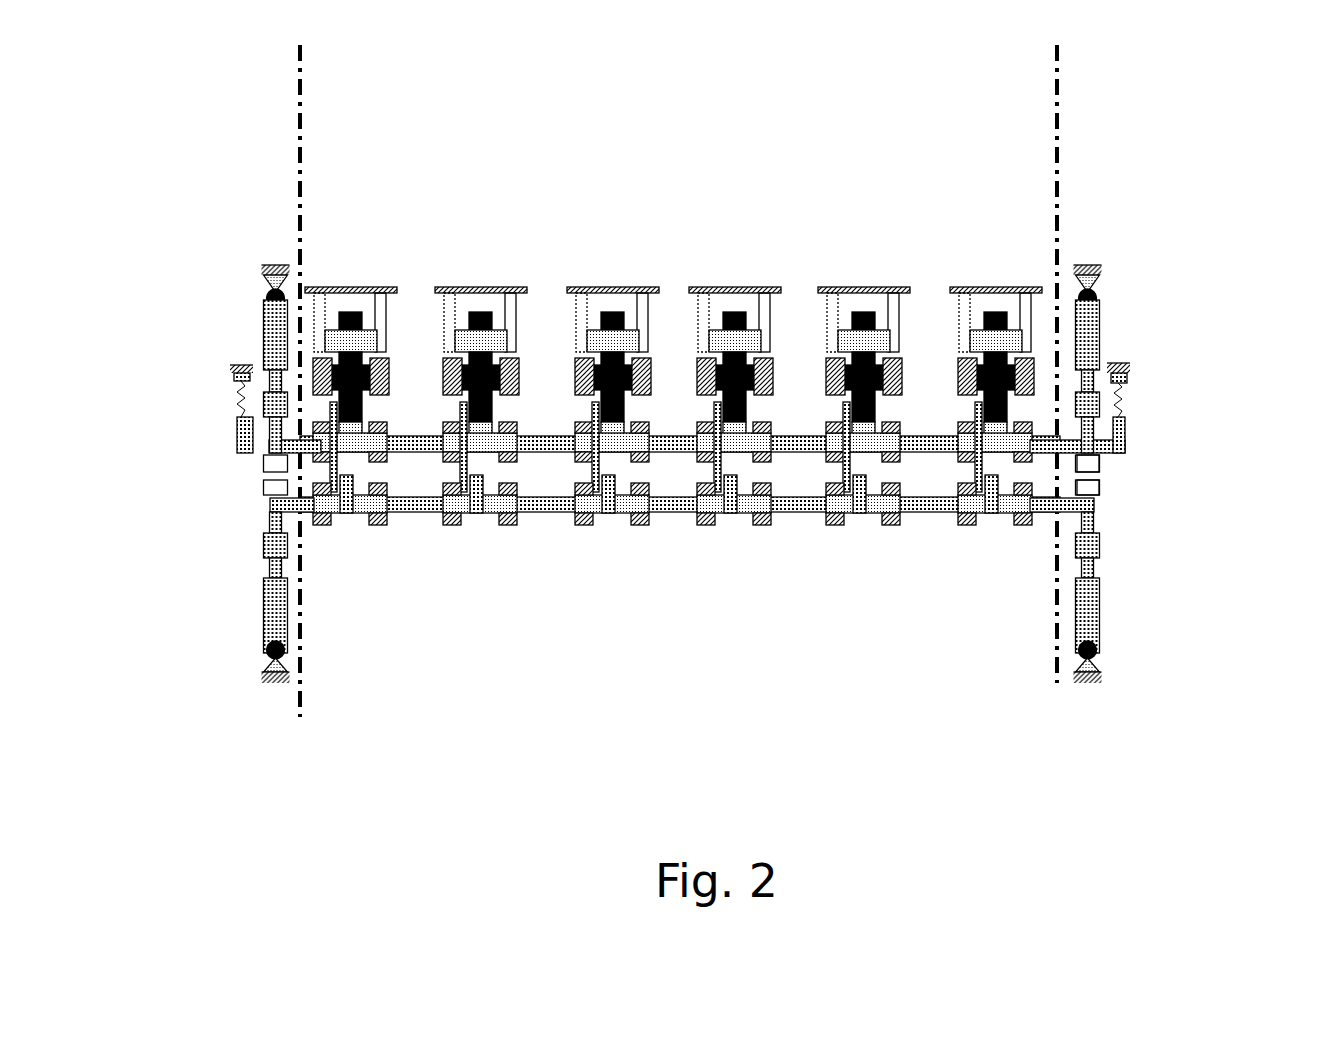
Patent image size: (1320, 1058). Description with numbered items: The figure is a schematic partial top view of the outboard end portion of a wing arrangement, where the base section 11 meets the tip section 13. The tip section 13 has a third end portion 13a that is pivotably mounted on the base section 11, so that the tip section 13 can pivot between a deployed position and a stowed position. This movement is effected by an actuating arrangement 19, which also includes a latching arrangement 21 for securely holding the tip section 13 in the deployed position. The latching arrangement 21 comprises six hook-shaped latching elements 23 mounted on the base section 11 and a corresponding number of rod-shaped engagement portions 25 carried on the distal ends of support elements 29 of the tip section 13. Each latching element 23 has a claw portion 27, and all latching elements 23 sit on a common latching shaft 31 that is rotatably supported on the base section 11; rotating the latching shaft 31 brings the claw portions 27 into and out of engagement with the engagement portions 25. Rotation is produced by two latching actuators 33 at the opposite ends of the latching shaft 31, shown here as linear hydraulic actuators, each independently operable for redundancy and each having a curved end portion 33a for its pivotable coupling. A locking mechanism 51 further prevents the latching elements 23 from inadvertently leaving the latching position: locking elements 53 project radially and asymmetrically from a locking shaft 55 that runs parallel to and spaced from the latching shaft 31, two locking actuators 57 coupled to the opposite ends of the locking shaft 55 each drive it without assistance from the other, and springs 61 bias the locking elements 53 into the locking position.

The base section 11 is at (726, 800).
The tip section 13 is at (673, 172).
The third end portion 13a is at (470, 288).
The actuating arrangement 19 is at (1117, 215).
The latching arrangement 21 is at (1192, 402).
The latching elements 23 is at (589, 325).
The engagement portions 25 is at (748, 340).
The claw portion 27 is at (612, 322).
The support elements 29 is at (960, 320).
The latching shaft 31 is at (795, 445).
The latching actuators 33 is at (275, 325).
The curved end portion 33a is at (277, 435).
The locking mechanism 51 is at (1192, 488).
The locking elements 53 is at (337, 470).
The locking shaft 55 is at (537, 507).
The locking actuators 57 is at (282, 617).
The springs 61 is at (975, 477).